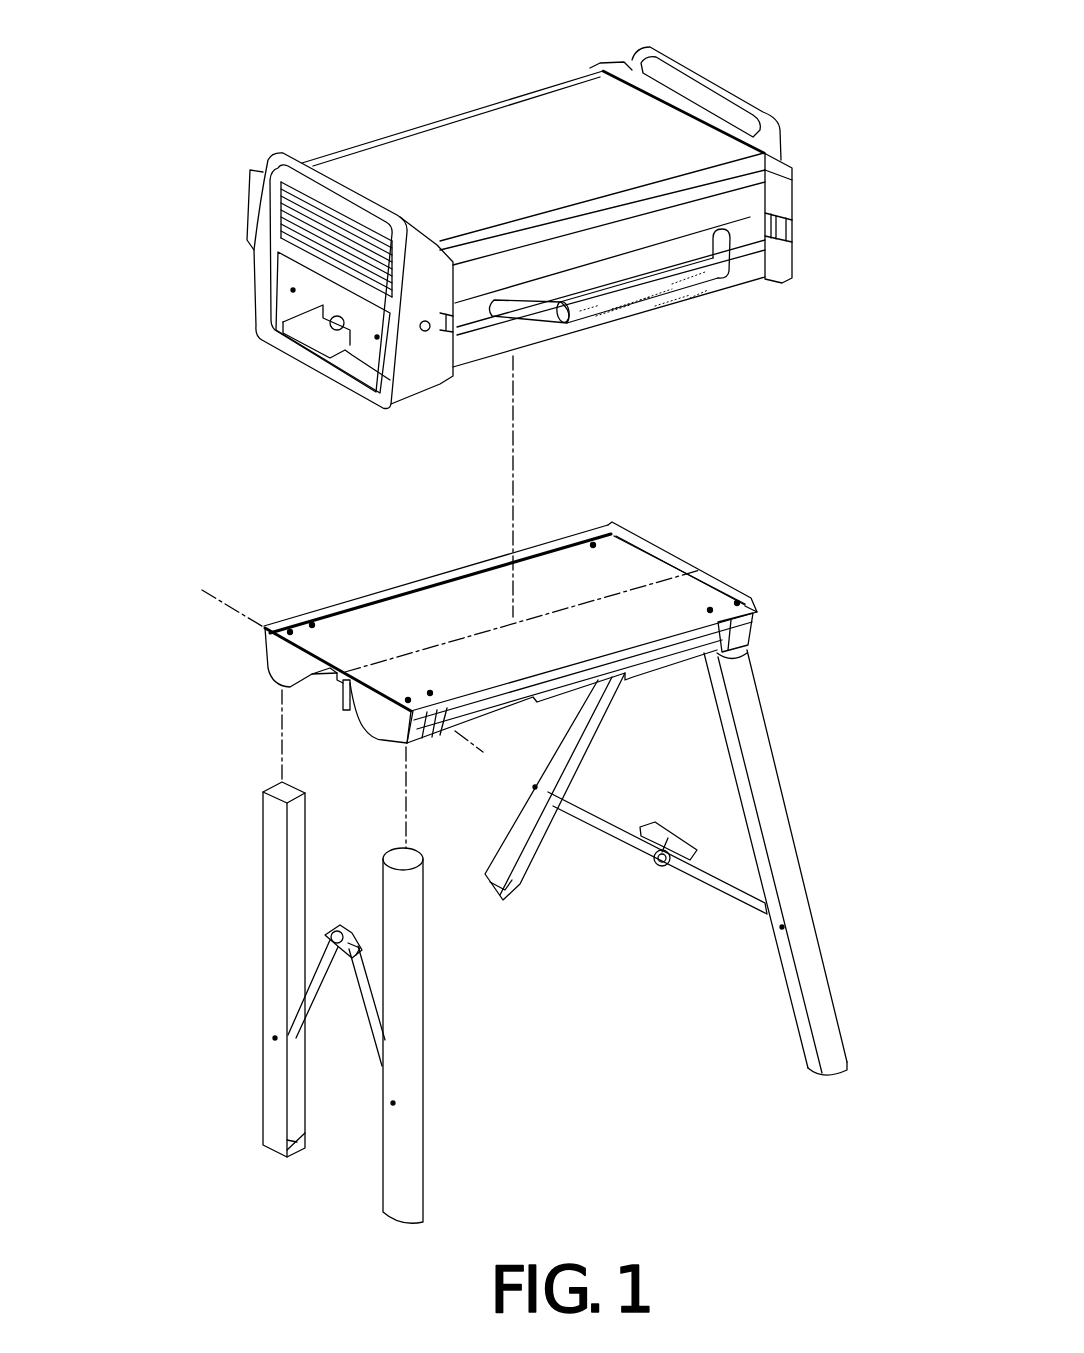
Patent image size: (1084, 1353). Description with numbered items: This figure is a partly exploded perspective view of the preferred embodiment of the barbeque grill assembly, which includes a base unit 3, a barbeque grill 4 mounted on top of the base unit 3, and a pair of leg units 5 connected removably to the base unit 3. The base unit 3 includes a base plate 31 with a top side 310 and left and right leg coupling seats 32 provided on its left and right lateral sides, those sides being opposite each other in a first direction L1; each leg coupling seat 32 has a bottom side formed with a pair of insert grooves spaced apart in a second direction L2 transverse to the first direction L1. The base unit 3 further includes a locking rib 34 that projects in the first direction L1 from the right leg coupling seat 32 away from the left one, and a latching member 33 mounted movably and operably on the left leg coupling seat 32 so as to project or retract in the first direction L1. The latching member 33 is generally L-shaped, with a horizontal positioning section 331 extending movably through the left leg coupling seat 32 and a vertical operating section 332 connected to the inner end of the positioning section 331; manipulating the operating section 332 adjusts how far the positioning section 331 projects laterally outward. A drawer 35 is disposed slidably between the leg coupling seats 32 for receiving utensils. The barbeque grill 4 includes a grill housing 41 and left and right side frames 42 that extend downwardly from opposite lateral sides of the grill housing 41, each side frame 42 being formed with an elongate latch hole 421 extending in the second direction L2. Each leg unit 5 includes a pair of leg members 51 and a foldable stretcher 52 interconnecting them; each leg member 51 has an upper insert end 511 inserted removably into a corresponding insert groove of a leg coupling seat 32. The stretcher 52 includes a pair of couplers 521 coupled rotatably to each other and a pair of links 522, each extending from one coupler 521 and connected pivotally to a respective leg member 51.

The base unit 3 is at (542, 547).
The base plate 31 is at (447, 598).
The top side 310 is at (608, 572).
The leg coupling seats 32 is at (287, 655).
The latching member 33 is at (342, 700).
The horizontal positioning section 331 is at (272, 675).
The vertical operating section 332 is at (350, 710).
The locking rib 34 is at (693, 567).
The drawer 35 is at (697, 647).
The barbeque grill 4 is at (493, 100).
The grill housing 41 is at (568, 117).
The side frames 42 is at (400, 377).
The elongate latch hole 421 is at (357, 363).
The leg units 5 is at (752, 713).
The leg members 51 is at (268, 1088).
The upper insert end 511 is at (273, 810).
The foldable stretcher 52 is at (377, 987).
The couplers 521 is at (343, 927).
The links 522 is at (322, 995).
The first direction L1 is at (693, 570).
The second direction L2 is at (328, 651).